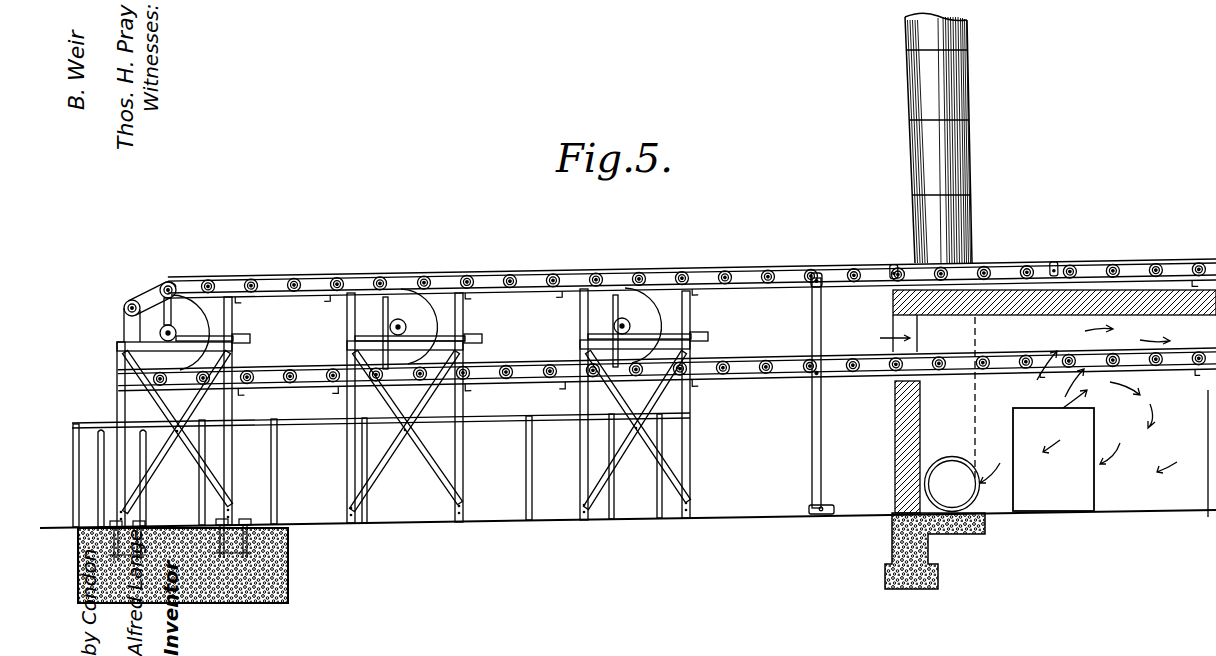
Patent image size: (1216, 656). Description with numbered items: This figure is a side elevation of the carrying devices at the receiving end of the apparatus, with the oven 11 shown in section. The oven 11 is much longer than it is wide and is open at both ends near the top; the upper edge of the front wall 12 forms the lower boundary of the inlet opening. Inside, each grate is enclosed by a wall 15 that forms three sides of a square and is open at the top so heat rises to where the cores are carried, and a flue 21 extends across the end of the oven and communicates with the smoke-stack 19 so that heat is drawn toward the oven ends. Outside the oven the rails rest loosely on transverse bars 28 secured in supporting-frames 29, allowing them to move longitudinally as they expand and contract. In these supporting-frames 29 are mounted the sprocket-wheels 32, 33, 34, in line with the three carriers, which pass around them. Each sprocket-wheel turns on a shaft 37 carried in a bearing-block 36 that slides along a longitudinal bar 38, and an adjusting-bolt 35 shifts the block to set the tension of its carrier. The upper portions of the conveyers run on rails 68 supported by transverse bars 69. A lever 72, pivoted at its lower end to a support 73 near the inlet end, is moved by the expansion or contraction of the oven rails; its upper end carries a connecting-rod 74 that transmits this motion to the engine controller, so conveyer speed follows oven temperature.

The oven 11 is at (1078, 402).
The front wall 12 is at (895, 420).
The wall 15 is at (1068, 405).
The smoke-stack 19 is at (938, 138).
The flue 21 is at (953, 457).
The transverse bar 28 is at (337, 395).
The supporting-frame 29 is at (123, 432).
The sprocket-wheel 32 is at (184, 332).
The sprocket-wheel 33 is at (413, 326).
The sprocket-wheel 34 is at (637, 325).
The adjusting-bolt 35 is at (252, 338).
The bearing-block 36 is at (164, 327).
The shaft 37 is at (161, 333).
The longitudinal bar 38 is at (162, 348).
The rail 68 is at (793, 285).
The transverse bar 69 is at (329, 304).
The lever 72 is at (814, 462).
The support 73 is at (836, 509).
The connecting-rod 74 is at (836, 273).